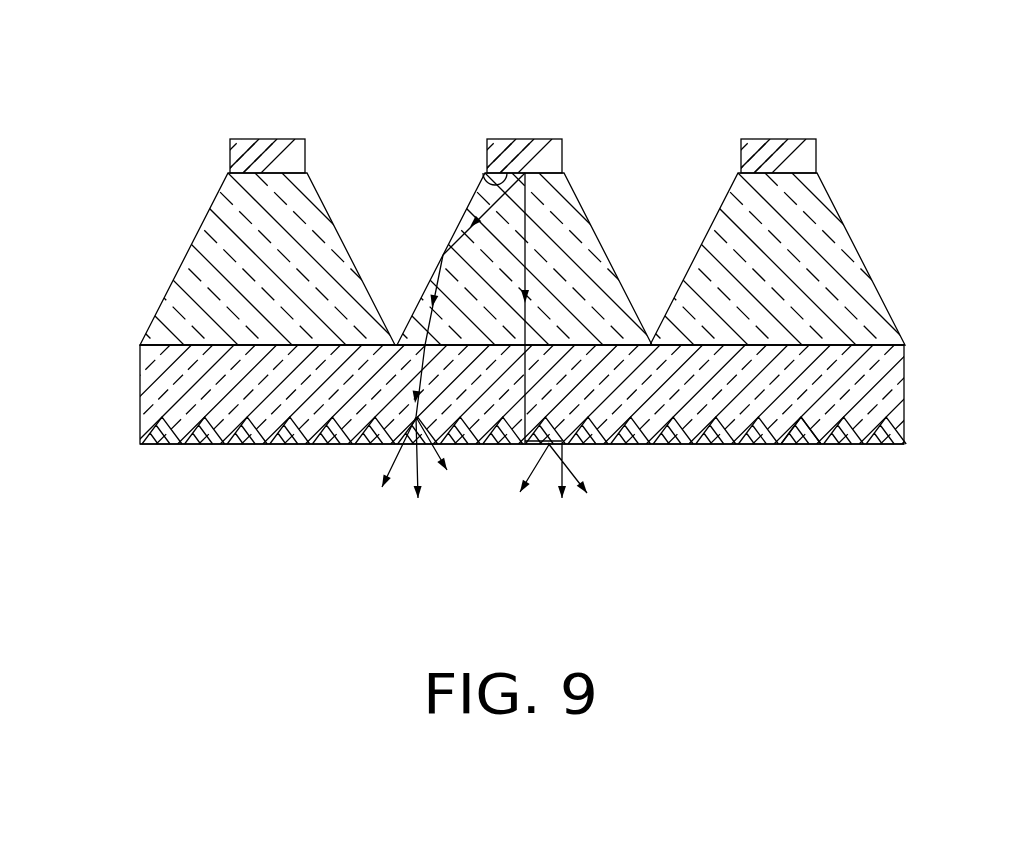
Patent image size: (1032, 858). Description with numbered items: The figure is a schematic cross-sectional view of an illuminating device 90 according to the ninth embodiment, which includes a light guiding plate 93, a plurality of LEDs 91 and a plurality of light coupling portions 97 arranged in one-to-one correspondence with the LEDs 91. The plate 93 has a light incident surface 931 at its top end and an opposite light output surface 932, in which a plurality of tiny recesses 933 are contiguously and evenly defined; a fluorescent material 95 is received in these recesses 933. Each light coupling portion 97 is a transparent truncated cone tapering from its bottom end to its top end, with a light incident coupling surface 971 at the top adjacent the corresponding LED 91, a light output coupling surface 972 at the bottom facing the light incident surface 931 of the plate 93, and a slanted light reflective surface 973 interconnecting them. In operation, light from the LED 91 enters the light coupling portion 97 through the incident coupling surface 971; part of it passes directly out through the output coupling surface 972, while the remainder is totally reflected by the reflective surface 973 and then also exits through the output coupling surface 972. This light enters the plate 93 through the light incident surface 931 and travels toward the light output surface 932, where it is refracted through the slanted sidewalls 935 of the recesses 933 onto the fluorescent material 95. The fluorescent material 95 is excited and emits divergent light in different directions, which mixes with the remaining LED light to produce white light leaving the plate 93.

The illuminating device 90 is at (530, 48).
The LED 91 is at (272, 139).
The light guiding plate 93 is at (157, 408).
The light incident surface 931 is at (153, 348).
The light output surface 932 is at (167, 445).
The recesses 933 is at (788, 439).
The slanted sidewalls 935 is at (808, 442).
The fluorescent material 95 is at (798, 433).
The light coupling portion 97 is at (420, 320).
The light incident coupling surface 971 is at (488, 188).
The light output coupling surface 972 is at (602, 343).
The slanted light reflective surface 973 is at (453, 240).